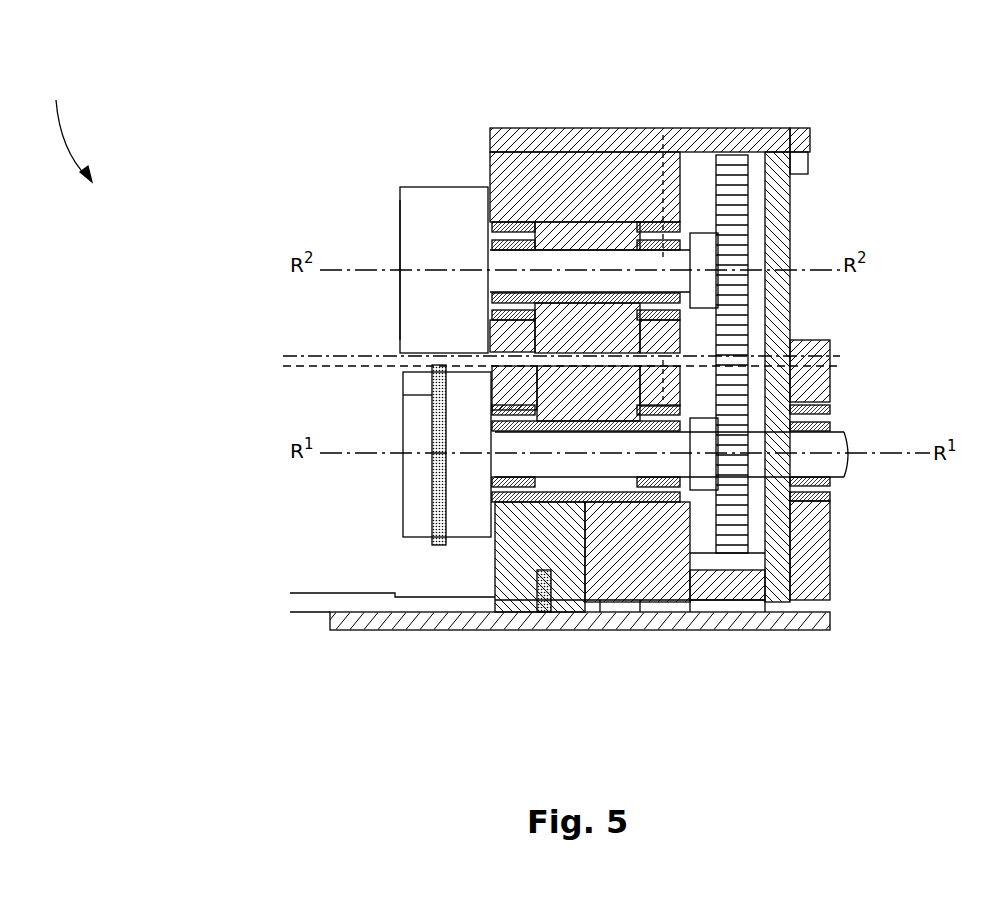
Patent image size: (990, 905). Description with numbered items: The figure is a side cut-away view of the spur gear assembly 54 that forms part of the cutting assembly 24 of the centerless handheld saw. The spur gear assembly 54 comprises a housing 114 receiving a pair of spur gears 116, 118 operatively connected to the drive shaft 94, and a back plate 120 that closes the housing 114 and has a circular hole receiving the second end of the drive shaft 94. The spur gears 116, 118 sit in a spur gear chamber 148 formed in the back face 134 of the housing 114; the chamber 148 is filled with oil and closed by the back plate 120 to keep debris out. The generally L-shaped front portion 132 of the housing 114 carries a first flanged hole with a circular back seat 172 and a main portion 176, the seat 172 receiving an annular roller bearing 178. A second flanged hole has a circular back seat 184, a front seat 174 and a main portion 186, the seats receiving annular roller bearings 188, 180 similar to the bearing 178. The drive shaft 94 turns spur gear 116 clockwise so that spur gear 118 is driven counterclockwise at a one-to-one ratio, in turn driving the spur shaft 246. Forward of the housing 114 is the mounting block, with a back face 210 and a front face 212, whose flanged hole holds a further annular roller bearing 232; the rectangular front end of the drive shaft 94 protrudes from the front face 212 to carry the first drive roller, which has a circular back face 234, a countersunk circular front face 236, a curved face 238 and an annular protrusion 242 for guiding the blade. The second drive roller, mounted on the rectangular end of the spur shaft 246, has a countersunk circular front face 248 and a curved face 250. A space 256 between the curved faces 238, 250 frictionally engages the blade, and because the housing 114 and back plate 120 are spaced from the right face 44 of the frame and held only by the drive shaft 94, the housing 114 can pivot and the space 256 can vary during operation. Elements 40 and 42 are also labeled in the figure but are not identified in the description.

The cutting assembly 24 is at (67, 129).
The base plate 40 is at (322, 630).
The mounting plate 42 is at (690, 630).
The right face of the frame 44 is at (762, 598).
The spur gear assembly 54 is at (652, 305).
The drive shaft 94 is at (810, 428).
The housing 114 is at (614, 132).
The spur gear 116 is at (660, 602).
The spur gear 118 is at (728, 152).
The back plate 120 is at (792, 213).
The front portion 132 is at (520, 225).
The back face 134 is at (782, 145).
The spur gear chamber 148 is at (726, 598).
The circular back seat 172 is at (705, 558).
The front seat 174 is at (497, 165).
The main portion 176 is at (558, 612).
The annular roller bearing 178 is at (662, 398).
The annular roller bearing 180 is at (662, 322).
The circular back seat 184 is at (680, 170).
The main portion 186 is at (578, 240).
The annular roller bearing 188 is at (505, 325).
The back face 210 is at (656, 505).
The front face 212 is at (490, 574).
The annular roller bearing 232 is at (586, 398).
The circular back face 234 is at (500, 465).
The countersunk circular front face 236 is at (398, 512).
The curved face 238 is at (410, 398).
The annular protrusion 242 is at (430, 546).
The spur shaft 246 is at (590, 271).
The countersunk circular front face 248 is at (395, 215).
The curved face 250 is at (425, 200).
The space 256 is at (392, 358).